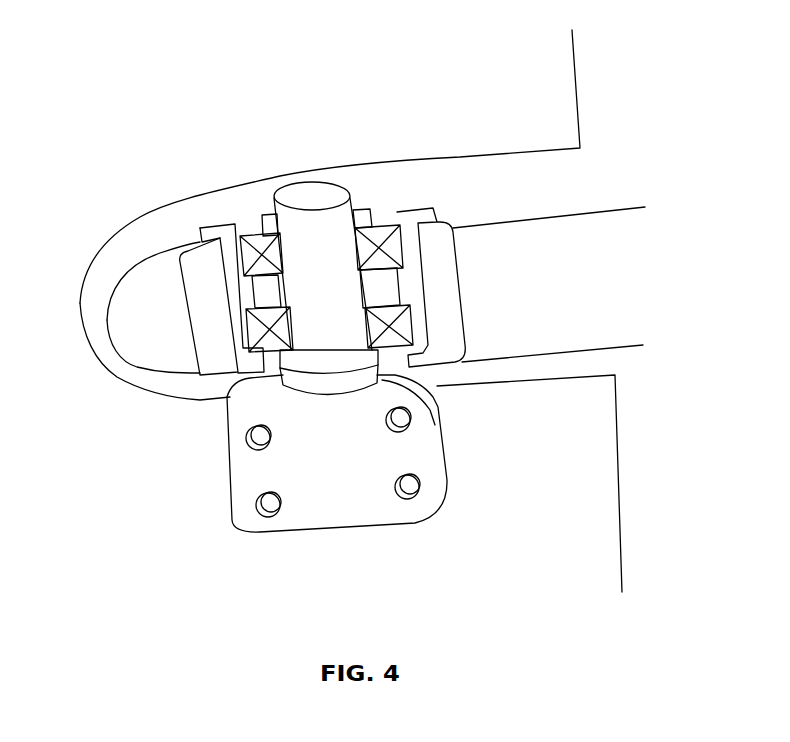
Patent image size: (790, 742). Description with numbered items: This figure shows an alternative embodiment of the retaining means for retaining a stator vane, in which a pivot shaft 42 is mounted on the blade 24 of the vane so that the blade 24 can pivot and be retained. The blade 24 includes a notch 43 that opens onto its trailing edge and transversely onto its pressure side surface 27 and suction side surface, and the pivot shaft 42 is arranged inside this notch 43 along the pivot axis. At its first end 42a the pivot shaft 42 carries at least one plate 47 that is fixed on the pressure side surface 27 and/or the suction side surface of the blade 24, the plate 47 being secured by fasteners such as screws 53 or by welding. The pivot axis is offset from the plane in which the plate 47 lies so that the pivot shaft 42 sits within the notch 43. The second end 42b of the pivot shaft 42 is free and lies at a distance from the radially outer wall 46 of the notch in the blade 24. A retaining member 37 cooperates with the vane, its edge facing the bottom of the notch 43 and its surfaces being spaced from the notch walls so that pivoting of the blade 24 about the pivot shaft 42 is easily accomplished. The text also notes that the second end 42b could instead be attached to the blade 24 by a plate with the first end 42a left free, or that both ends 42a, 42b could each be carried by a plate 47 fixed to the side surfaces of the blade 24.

The blade 24 is at (347, 133).
The pressure side surface 27 is at (598, 465).
The retaining member 37 is at (155, 330).
The pivot shaft 42 is at (333, 329).
The first end 42a is at (295, 383).
The second end 42b is at (343, 213).
The notch 43 is at (217, 218).
The radially outer wall 46 is at (547, 163).
The plate 47 is at (357, 498).
The screws 53 is at (410, 490).